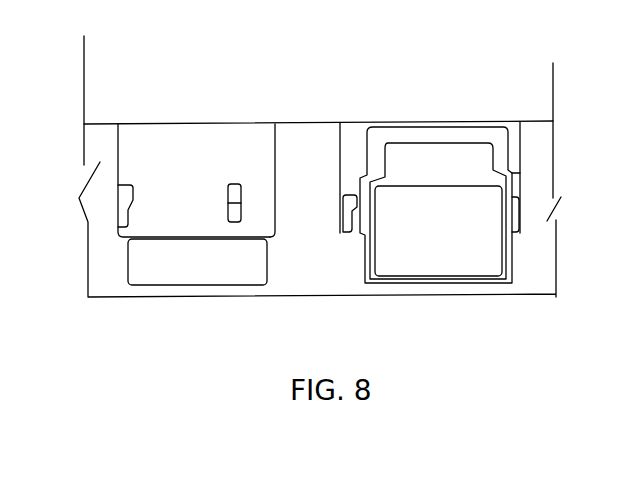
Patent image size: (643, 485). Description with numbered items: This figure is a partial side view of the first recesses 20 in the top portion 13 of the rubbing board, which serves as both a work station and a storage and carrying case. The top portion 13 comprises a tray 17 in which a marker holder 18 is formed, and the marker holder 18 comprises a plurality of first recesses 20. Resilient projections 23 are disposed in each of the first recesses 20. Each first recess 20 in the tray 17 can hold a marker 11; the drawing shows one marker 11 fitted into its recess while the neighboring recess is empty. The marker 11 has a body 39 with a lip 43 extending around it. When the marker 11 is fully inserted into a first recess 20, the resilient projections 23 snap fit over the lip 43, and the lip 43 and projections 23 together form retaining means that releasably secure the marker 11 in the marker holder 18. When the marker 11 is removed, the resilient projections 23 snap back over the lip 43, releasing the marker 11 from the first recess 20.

The marker 11 is at (515, 218).
The top portion 13 is at (326, 122).
The tray 17 is at (316, 218).
The marker holder 18 is at (405, 284).
The first recess 20 is at (359, 147).
The resilient projection 23 is at (341, 198).
The body 39 is at (515, 192).
The lip 43 is at (355, 227).